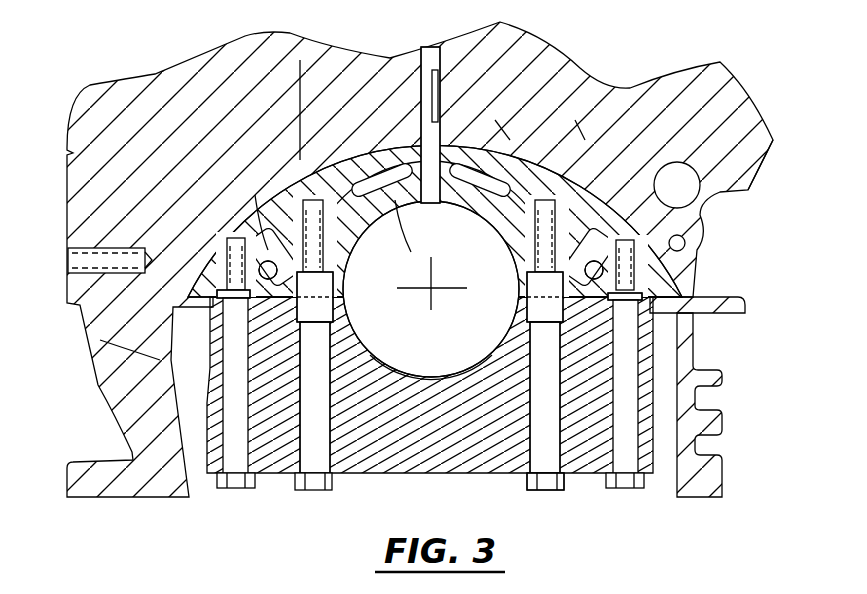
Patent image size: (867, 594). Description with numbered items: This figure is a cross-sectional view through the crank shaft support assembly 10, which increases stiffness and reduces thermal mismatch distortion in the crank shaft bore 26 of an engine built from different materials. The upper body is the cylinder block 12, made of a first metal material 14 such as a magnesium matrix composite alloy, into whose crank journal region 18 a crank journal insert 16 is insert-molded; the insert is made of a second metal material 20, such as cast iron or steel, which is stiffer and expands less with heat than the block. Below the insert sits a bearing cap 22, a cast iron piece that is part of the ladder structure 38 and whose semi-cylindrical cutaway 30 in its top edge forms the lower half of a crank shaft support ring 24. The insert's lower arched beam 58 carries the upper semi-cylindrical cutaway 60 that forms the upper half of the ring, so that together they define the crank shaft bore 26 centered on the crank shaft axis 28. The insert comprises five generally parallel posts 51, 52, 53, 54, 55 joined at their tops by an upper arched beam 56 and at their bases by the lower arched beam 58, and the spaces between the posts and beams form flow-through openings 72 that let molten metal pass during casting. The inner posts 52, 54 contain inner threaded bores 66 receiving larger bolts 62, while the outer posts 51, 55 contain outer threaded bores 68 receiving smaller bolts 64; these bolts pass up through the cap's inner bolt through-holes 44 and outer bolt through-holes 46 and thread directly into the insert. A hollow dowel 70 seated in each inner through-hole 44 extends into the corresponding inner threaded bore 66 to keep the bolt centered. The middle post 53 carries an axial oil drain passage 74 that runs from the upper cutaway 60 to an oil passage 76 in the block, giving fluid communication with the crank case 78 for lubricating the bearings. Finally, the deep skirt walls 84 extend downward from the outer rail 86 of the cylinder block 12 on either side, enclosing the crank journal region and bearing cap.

The crank shaft support assembly 10 is at (782, 220).
The cylinder block 12 is at (730, 96).
The first metal material 14 is at (747, 120).
The crank journal insert 16 is at (495, 140).
The crank journal region 18 is at (315, 163).
The second metal material 20 is at (580, 133).
The bearing cap 22 is at (423, 437).
The crank shaft support ring 24 is at (350, 332).
The crank shaft bore 26 is at (431, 289).
The crank shaft axis 28 is at (433, 290).
The semi-cylindrical cutaway 30 is at (393, 365).
The ladder structure 38 is at (590, 475).
The inner bolt through-holes 44 is at (302, 480).
The outer bolt through-holes 46 is at (227, 467).
The post 51 is at (217, 263).
The post 52 is at (267, 200).
The middle post 53 is at (418, 163).
The post 54 is at (585, 195).
The post 55 is at (640, 268).
The upper arched beam 56 is at (352, 173).
The lower arched beam 58 is at (373, 203).
The upper semi-cylindrical cutaway 60 is at (478, 213).
The larger bolts 62 is at (337, 480).
The smaller bolts 64 is at (242, 478).
The inner threaded bores 66 is at (323, 243).
The outer threaded bores 68 is at (228, 284).
The hollow dowel 70 is at (305, 313).
The flow-through openings 72 is at (240, 205).
The oil drain passage 74 is at (435, 160).
The oil passage 76 is at (443, 70).
The crank case 78 is at (187, 353).
The skirt walls 84 is at (693, 373).
The outer rail 86 is at (680, 302).